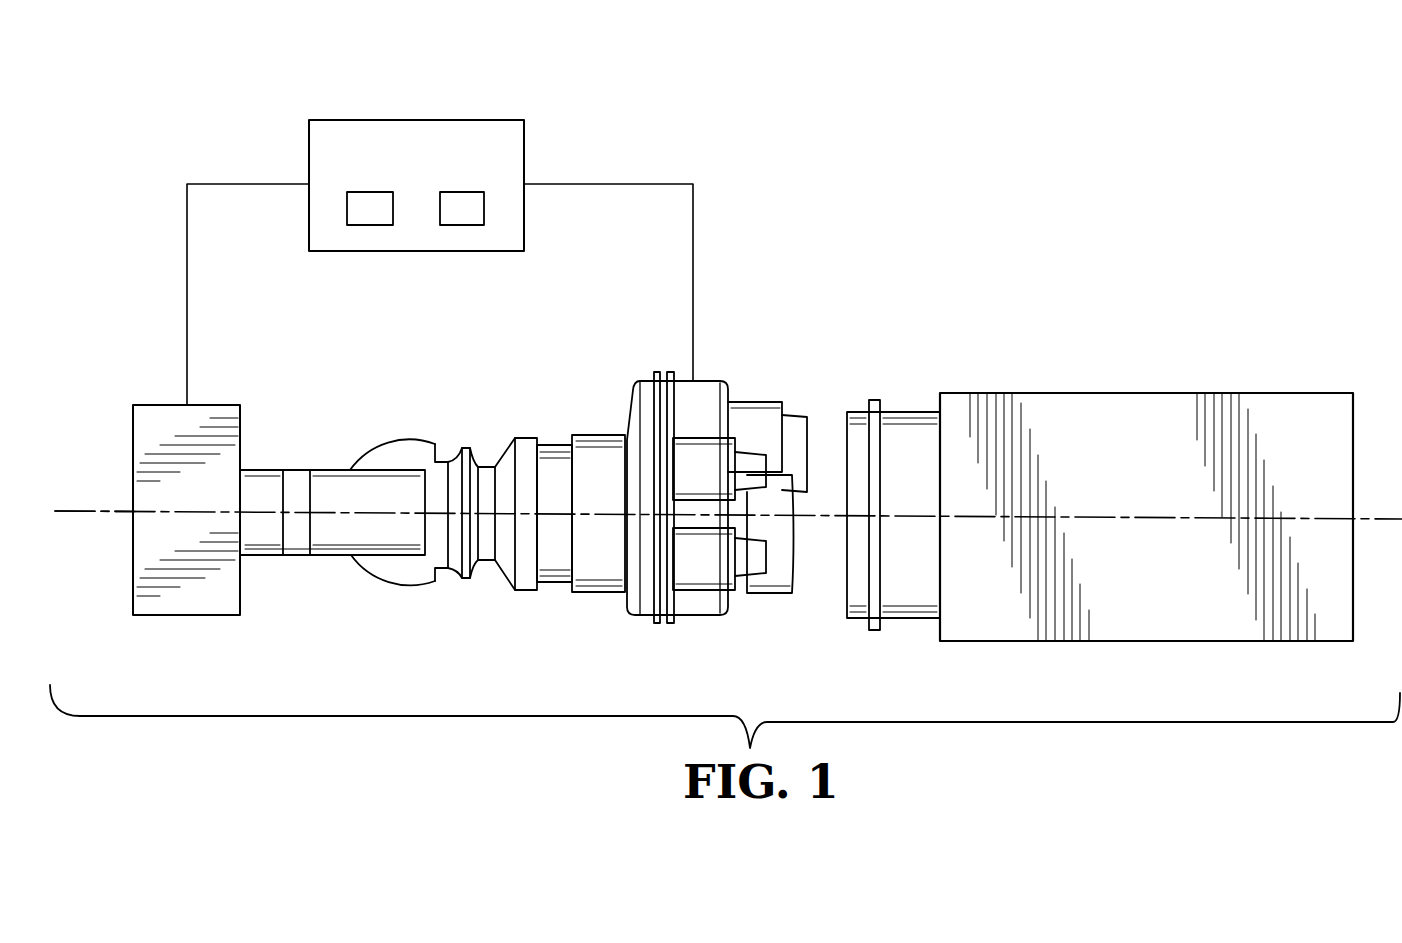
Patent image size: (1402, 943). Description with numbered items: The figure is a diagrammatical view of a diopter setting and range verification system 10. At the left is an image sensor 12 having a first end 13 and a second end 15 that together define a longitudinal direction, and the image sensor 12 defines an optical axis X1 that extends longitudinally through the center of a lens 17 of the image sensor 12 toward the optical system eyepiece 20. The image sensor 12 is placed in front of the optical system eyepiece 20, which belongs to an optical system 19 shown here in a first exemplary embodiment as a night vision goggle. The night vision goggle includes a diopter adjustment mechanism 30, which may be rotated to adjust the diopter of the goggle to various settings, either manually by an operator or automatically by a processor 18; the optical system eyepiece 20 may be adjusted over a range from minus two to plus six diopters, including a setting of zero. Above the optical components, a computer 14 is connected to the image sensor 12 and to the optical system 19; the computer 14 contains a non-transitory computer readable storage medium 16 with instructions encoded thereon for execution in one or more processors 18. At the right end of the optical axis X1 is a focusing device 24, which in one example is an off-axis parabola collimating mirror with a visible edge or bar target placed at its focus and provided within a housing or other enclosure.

The diopter setting and range verification system 10 is at (1048, 140).
The image sensor 12 is at (376, 484).
The first end 13 is at (133, 430).
The computer 14 is at (427, 118).
The second end 15 is at (423, 493).
The non-transitory computer readable storage medium 16 is at (368, 192).
The lens 17 is at (325, 557).
The processor 18 is at (460, 192).
The optical system 19 is at (708, 378).
The optical system eyepiece 20 is at (595, 435).
The focusing device 24 is at (1148, 392).
The diopter adjustment mechanism 30 is at (555, 445).
The optical axis X1 is at (74, 508).